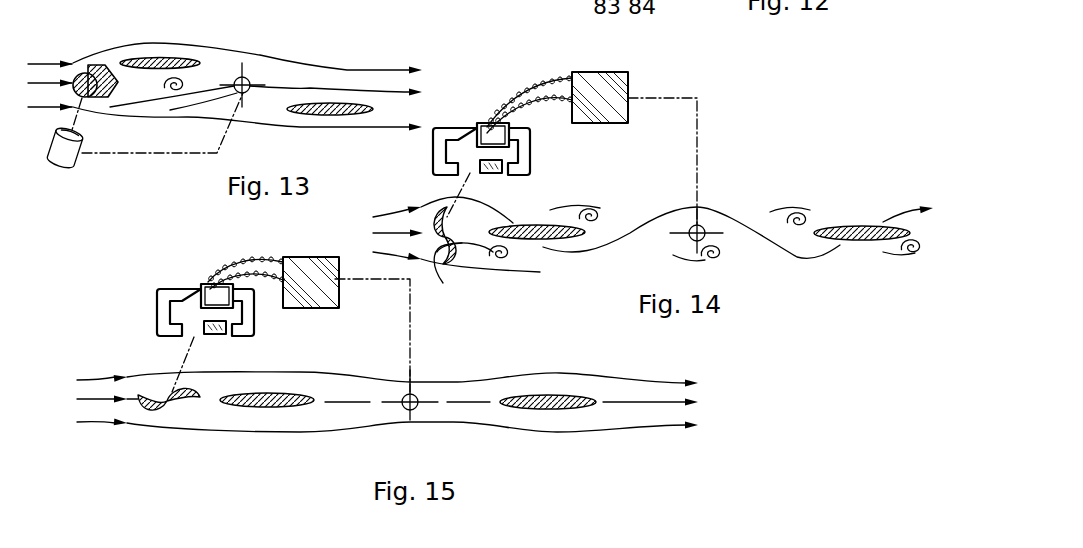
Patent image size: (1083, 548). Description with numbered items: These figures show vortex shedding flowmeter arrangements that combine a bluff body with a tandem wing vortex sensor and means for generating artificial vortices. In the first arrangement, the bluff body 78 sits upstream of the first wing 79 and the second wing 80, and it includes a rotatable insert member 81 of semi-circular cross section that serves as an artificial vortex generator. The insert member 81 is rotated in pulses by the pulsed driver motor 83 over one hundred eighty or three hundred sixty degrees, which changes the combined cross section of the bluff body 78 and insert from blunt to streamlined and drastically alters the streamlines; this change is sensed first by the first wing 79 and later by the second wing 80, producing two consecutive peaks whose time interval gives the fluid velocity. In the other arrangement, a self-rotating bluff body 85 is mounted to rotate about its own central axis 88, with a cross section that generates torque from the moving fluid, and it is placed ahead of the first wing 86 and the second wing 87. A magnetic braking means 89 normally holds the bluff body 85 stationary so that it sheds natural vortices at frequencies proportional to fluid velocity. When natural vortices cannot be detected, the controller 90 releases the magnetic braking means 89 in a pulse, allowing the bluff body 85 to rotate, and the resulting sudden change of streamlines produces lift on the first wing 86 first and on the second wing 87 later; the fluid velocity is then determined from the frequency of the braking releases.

In FIG. 13, the bluff body 78 is at (110, 65).
In FIG. 13, the first wing 79 is at (170, 58).
In FIG. 13, the second wing 80 is at (344, 103).
In FIG. 13, the rotatable insert member 81 is at (83, 75).
In FIG. 13, the pulsed driver motor 83 is at (80, 158).
In FIG. 14, the bluff body 85 is at (462, 255).
In FIG. 15, the bluff body 85 is at (150, 408).
In FIG. 14, the first wing 86 is at (543, 225).
In FIG. 15, the first wing 86 is at (262, 408).
In FIG. 14, the second wing 87 is at (868, 226).
In FIG. 15, the second wing 87 is at (557, 410).
In FIG. 14, the central axis 88 is at (437, 265).
In FIG. 14, the magnetic braking means 89 is at (508, 148).
In FIG. 15, the magnetic braking means 89 is at (157, 312).
In FIG. 14, the controller 90 is at (628, 83).
In FIG. 15, the controller 90 is at (307, 307).